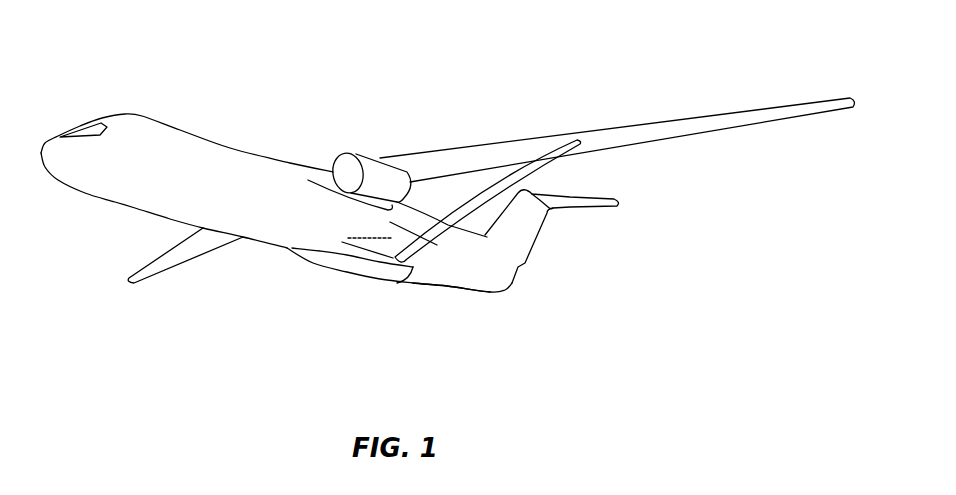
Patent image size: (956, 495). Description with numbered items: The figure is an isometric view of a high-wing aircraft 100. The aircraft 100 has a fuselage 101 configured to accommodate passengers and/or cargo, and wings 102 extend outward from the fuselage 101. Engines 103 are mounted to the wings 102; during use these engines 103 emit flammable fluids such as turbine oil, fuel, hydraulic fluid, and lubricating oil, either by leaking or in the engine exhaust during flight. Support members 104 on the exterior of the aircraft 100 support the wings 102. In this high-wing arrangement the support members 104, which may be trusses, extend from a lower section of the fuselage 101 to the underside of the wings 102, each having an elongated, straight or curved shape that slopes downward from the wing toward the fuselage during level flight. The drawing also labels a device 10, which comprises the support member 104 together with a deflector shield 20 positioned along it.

The aircraft 100 is at (252, 103).
The fuselage 101 is at (147, 135).
The wings 102 is at (644, 132).
The engines 103 is at (377, 173).
The support member 104 is at (467, 207).
The device 10 is at (453, 282).
The deflector shield 20 is at (406, 226).